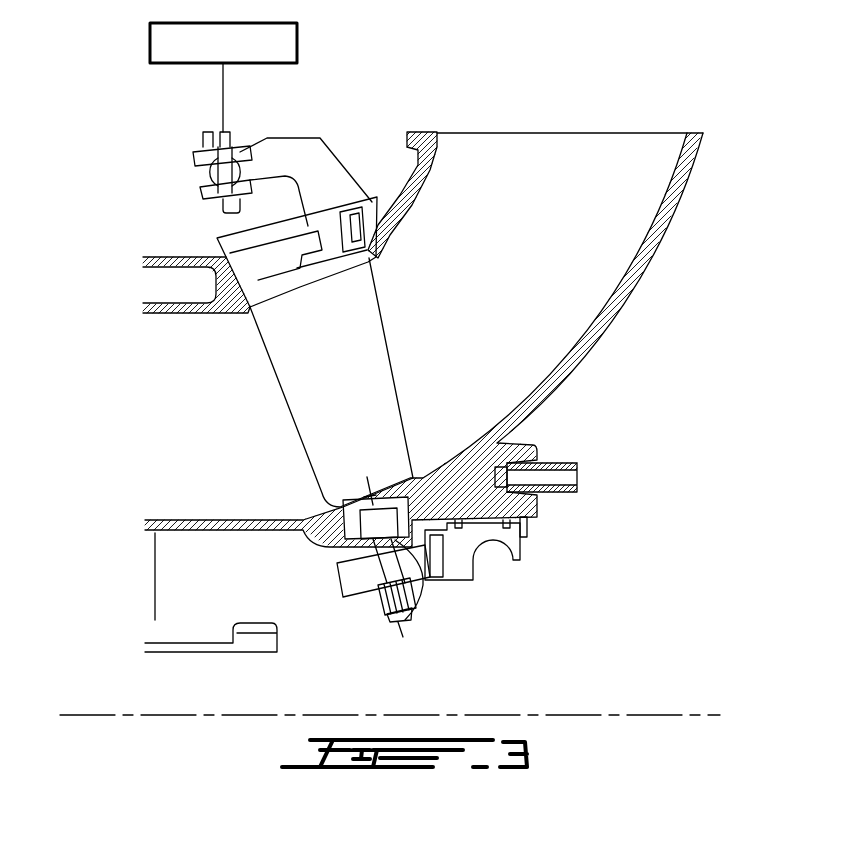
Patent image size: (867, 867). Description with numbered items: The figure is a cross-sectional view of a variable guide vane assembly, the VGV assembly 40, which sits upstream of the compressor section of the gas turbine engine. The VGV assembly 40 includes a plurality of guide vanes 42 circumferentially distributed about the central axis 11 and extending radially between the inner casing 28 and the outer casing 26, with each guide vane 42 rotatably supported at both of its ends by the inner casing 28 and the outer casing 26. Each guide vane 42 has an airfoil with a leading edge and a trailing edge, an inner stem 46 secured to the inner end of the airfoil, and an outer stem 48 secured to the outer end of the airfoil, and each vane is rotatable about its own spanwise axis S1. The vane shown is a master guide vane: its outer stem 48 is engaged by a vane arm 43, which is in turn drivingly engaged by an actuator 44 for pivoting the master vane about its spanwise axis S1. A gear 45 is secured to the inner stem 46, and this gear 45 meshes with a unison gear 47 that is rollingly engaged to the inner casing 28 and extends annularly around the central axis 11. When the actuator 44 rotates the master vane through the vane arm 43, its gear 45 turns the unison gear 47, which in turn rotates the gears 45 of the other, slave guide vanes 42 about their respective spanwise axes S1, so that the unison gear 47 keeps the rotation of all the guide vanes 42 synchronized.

The central axis 11 is at (100, 712).
The outer casing 26 is at (430, 168).
The inner casing 28 is at (618, 312).
The VGV assembly 40 is at (191, 132).
The guide vane 42 is at (334, 357).
The vane arm 43 is at (262, 152).
The actuator 44 is at (297, 44).
The gear 45 is at (366, 590).
The inner stem 46 is at (423, 578).
The unison gear 47 is at (460, 566).
The outer stem 48 is at (330, 232).
The spanwise axis S1 is at (400, 548).